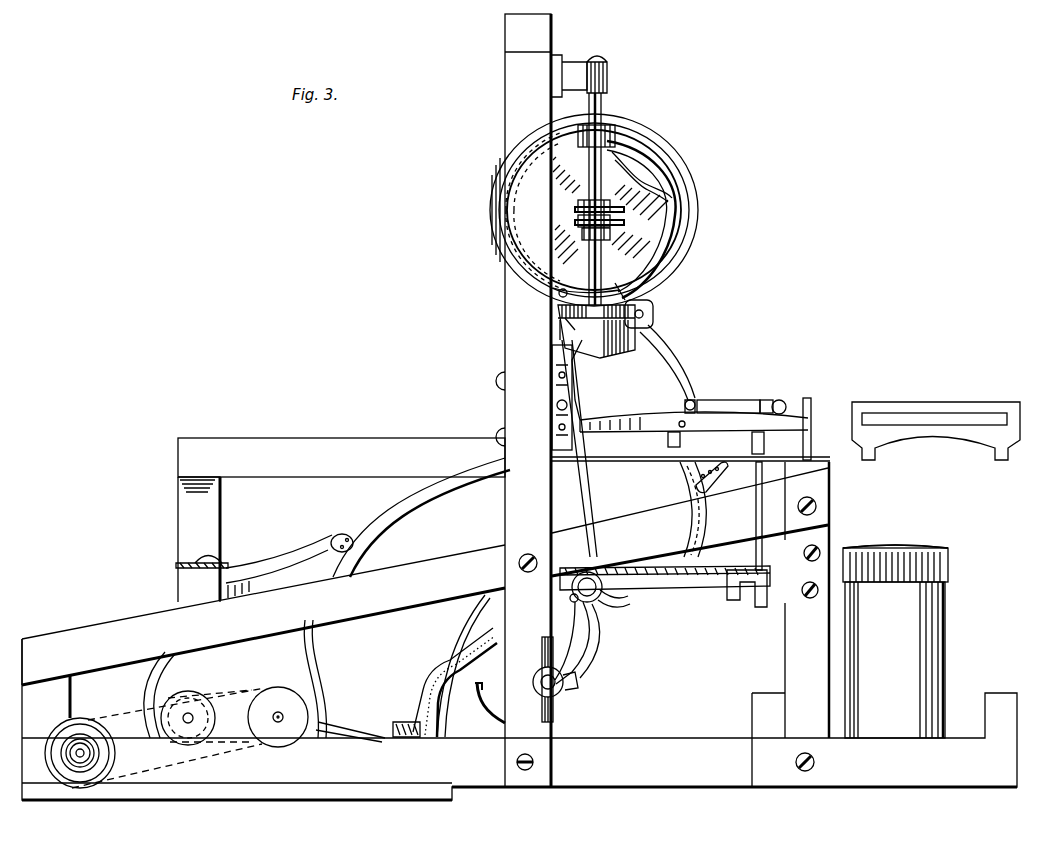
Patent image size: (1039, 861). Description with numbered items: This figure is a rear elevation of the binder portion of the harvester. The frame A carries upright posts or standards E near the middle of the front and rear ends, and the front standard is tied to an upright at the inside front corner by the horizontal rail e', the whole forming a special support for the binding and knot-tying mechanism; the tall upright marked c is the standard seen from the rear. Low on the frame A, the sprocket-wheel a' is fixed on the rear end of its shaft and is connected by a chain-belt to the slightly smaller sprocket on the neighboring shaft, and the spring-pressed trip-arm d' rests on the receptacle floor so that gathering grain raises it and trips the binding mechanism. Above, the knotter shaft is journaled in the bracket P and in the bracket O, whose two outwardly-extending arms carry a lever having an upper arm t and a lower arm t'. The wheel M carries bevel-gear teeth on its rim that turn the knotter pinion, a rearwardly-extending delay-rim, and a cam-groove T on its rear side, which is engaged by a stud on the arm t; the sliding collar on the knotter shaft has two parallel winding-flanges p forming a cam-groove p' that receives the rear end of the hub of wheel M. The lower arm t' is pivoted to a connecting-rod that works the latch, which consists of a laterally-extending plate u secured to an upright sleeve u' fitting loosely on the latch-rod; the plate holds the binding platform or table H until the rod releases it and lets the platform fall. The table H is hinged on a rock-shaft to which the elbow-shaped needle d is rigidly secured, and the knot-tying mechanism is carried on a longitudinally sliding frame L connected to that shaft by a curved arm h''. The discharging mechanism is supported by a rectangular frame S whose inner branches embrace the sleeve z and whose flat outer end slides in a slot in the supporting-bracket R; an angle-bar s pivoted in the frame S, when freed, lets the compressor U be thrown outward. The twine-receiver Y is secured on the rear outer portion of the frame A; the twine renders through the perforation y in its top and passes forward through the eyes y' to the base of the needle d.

The upright post c is at (528, 400).
The upright posts or standards E is at (534, 397).
The frame A is at (519, 619).
The horizontal rail e' is at (202, 574).
The sprocket-wheel a' is at (278, 717).
The spring-pressed trip-arm d' is at (410, 712).
The cam-groove T is at (688, 228).
The wheel M is at (640, 266).
The bracket P is at (572, 70).
The winding-flanges p is at (569, 220).
The cam-groove p' is at (612, 219).
The upper arm t is at (619, 283).
The bracket o is at (596, 331).
The lower arm t' is at (670, 362).
The rectangular frame S is at (632, 420).
The angle-bar s is at (682, 440).
The supporting-bracket R is at (811, 436).
The sleeve z is at (934, 419).
The compressor U is at (688, 492).
The curved arm h'' is at (588, 448).
The sliding frame L is at (596, 573).
The binding platform or table H is at (704, 576).
The latch plate u is at (740, 592).
The upright sleeve u' is at (770, 526).
The eyes y' is at (566, 610).
The needle d is at (583, 643).
The twine-receiver Y is at (895, 641).
The perforation y is at (895, 533).